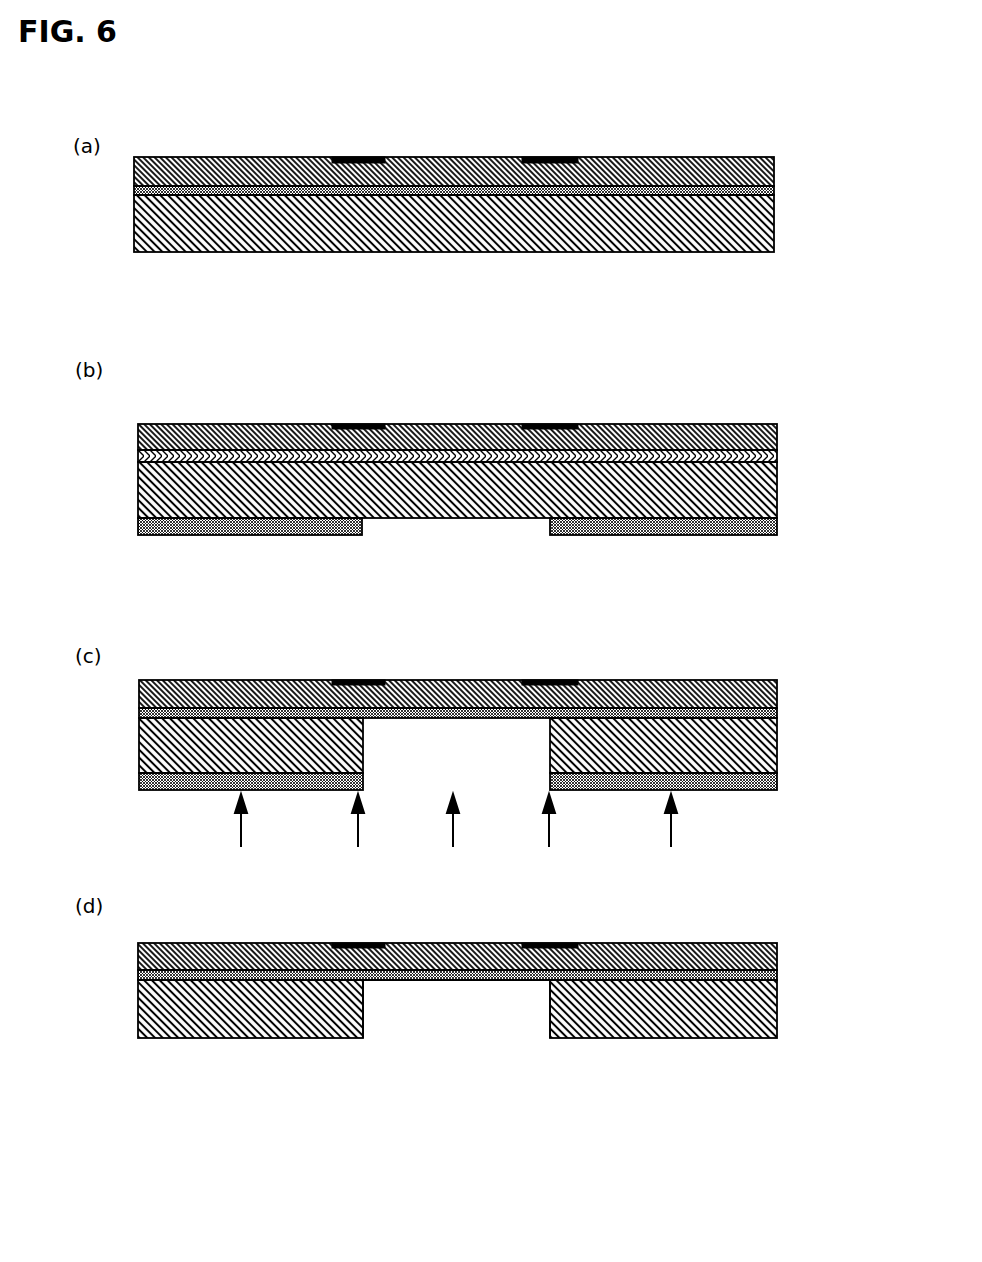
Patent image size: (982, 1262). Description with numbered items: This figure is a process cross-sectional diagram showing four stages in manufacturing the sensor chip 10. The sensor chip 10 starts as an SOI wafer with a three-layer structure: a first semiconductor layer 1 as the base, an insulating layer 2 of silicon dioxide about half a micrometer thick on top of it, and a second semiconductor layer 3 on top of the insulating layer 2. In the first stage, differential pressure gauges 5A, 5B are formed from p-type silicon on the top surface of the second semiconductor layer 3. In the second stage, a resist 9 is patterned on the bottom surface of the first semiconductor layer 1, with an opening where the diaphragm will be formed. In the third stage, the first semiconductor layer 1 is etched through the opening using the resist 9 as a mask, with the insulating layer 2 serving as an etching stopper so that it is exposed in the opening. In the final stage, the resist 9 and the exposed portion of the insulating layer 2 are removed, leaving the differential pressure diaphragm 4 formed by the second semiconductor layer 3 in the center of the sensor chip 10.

The first semiconductor layer 1 is at (482, 616).
The insulating layer 2 is at (775, 191).
The second semiconductor layer 3 is at (775, 172).
The differential pressure diaphragm 4 is at (460, 1033).
The differential pressure gauge 5A is at (364, 157).
The differential pressure gauge 5B is at (562, 157).
The resist 9 is at (230, 536).
The sensor chip 10 is at (505, 594).